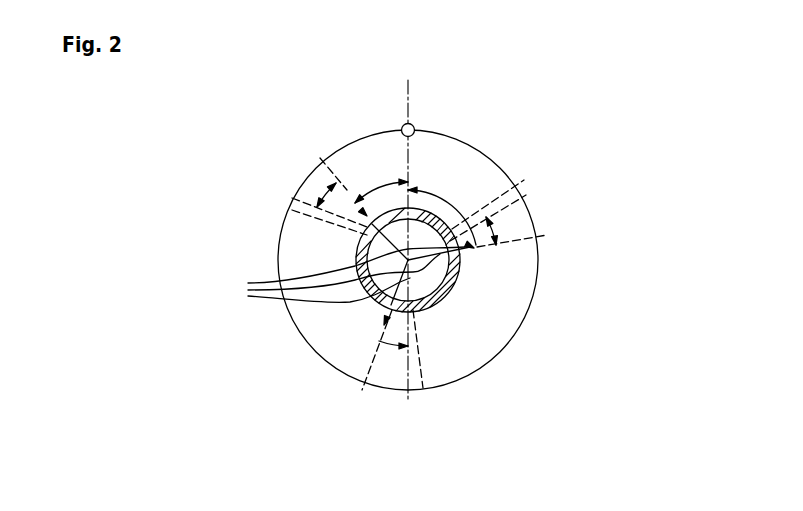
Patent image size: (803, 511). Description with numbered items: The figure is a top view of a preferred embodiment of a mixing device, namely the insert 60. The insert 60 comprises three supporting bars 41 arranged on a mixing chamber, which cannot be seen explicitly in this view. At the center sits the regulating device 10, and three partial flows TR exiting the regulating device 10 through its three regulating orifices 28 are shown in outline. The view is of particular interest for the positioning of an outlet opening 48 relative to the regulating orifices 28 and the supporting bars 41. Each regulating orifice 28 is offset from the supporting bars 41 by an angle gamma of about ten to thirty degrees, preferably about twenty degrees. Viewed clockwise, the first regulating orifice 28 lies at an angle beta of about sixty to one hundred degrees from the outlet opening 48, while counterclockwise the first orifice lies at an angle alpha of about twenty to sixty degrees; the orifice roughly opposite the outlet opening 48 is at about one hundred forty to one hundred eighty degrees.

The regulating device 10 is at (450, 295).
The regulating orifices 28 is at (372, 224).
The supporting bars 41 is at (293, 200).
The outlet opening 48 is at (417, 122).
The insert 60 is at (571, 91).
The partial flows TR is at (334, 276).